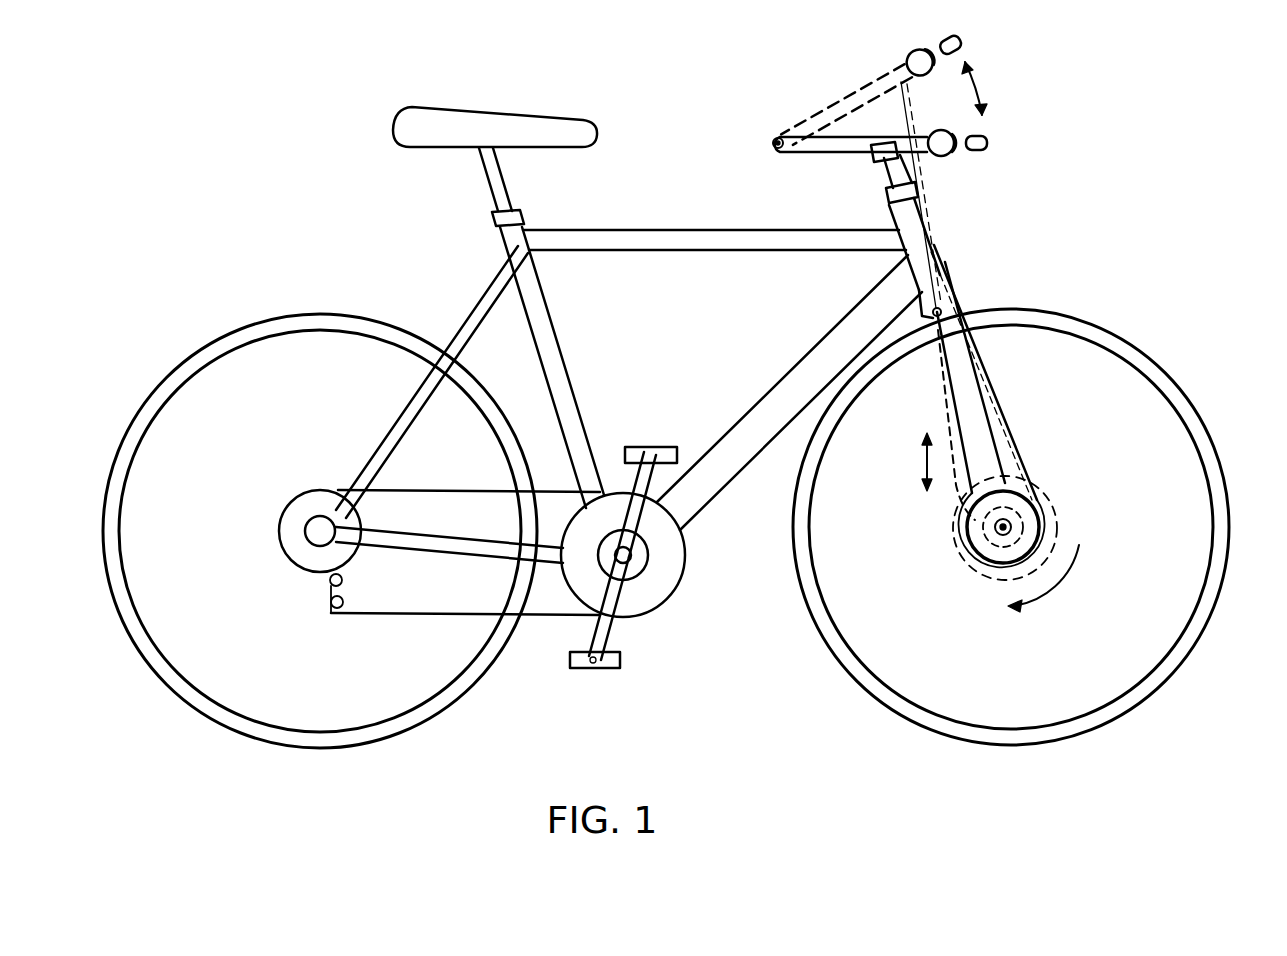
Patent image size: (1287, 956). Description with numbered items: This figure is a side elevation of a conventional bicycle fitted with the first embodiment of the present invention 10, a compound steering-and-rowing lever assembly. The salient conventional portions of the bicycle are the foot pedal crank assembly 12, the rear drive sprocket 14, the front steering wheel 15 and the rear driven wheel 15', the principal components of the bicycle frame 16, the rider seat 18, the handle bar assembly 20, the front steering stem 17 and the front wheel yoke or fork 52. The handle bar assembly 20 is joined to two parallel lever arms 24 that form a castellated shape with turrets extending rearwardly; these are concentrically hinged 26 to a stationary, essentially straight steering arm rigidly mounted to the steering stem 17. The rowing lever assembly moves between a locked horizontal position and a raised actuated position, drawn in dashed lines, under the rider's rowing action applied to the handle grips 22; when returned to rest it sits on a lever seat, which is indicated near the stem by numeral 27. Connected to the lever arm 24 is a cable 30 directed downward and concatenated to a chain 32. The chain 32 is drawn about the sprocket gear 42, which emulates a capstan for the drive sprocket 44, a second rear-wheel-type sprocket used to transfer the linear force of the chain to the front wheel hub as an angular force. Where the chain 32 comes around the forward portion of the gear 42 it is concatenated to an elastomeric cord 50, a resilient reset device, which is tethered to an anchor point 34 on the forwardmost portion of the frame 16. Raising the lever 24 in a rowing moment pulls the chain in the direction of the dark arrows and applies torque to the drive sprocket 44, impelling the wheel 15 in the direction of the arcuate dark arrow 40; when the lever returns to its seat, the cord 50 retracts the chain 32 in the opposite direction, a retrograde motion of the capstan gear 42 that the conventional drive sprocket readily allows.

The first embodiment of the present invention 10 is at (1196, 156).
The foot pedal crank assembly 12 is at (663, 568).
The rear drive sprocket 14 is at (298, 516).
The front steering wheel 15 is at (1002, 527).
The rear wheel 15' is at (320, 531).
The bicycle frame 16 is at (597, 237).
The front steering stem 17 is at (905, 183).
The rider seat 18 is at (545, 127).
The handle bar assembly 20 is at (960, 44).
The handle grips 22 is at (912, 42).
The lever arms 24 is at (847, 150).
The hinge 26 is at (772, 142).
The stem 27 is at (872, 162).
The cable 30 is at (907, 102).
The chain 32 is at (1012, 441).
The anchor point 34 is at (940, 268).
The rotation direction 40 is at (995, 593).
The sprocket gear 42 is at (977, 549).
The drive sprocket 44 is at (1054, 524).
The elastomeric cord 50 is at (995, 394).
The front wheel yoke or fork 52 is at (962, 385).